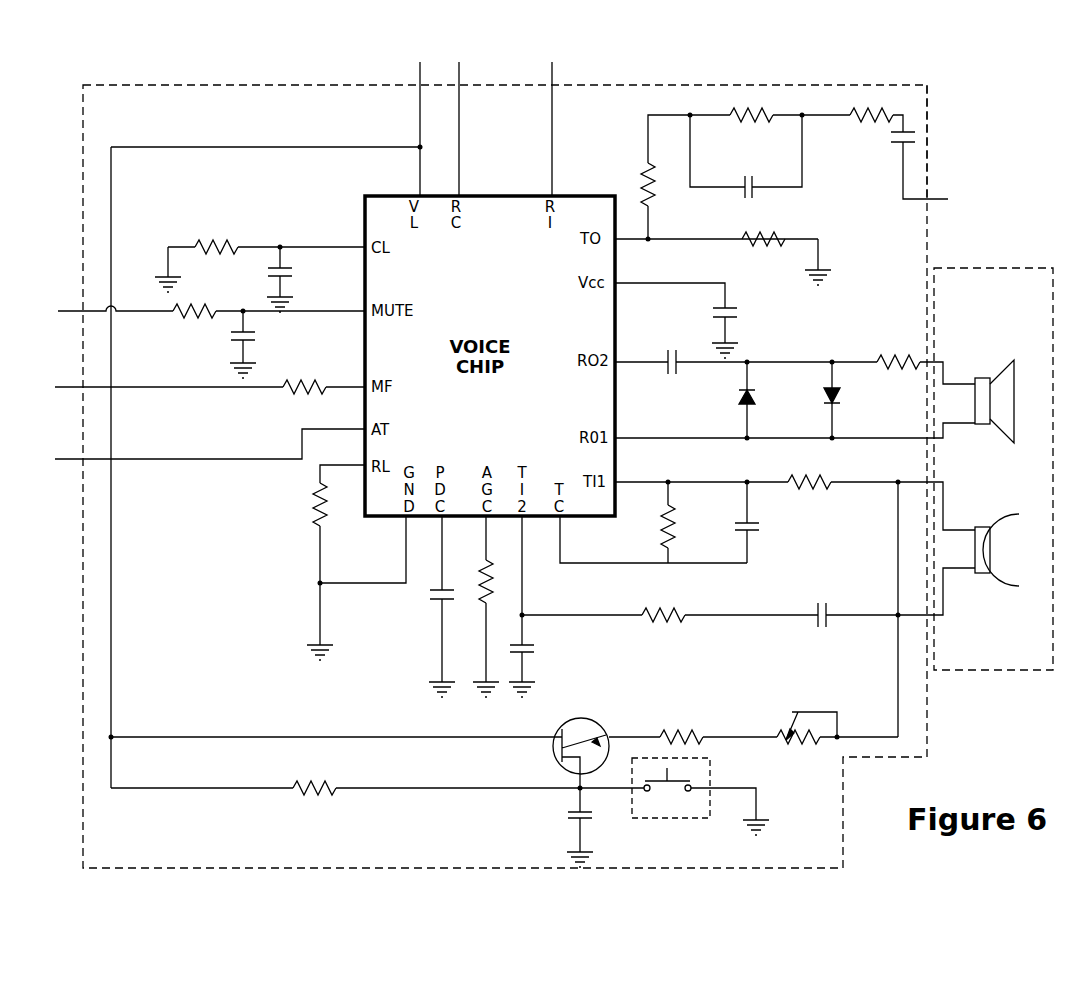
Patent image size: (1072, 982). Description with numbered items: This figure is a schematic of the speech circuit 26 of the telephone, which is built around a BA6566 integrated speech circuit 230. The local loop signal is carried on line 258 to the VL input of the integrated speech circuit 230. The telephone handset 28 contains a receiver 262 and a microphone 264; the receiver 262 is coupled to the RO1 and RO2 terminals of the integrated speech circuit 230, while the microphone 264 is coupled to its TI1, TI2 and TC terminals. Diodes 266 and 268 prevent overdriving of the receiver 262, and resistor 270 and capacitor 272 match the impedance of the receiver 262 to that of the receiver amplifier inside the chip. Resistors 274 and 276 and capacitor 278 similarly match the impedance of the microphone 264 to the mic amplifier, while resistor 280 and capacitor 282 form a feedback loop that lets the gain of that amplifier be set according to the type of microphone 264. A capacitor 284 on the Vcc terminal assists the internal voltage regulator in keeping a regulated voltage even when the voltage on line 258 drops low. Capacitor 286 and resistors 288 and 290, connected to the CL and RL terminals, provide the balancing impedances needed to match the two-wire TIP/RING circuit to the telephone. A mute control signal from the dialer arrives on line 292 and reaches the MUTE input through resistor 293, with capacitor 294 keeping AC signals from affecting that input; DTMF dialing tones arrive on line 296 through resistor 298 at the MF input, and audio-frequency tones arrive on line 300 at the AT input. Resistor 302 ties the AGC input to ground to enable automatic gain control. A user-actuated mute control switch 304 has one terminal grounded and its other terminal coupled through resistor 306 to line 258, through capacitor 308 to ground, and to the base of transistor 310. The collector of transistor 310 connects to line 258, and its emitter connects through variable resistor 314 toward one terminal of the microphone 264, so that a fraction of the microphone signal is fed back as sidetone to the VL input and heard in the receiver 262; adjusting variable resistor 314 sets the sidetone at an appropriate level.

The speech circuit 26 is at (930, 172).
The telephone handset 28 is at (1032, 268).
The integrated speech circuit 230 is at (604, 194).
The line 258 is at (420, 99).
The receiver 262 is at (1010, 362).
The microphone 264 is at (1002, 594).
The diode 266 is at (742, 405).
The diode 268 is at (828, 408).
The resistor 270 is at (897, 376).
The capacitor 272 is at (672, 380).
The resistor 274 is at (822, 494).
The resistor 276 is at (664, 626).
The capacitor 278 is at (826, 602).
The resistor 280 is at (664, 527).
The capacitor 282 is at (762, 537).
The capacitor 284 is at (713, 318).
The capacitor 286 is at (292, 277).
The resistor 288 is at (214, 247).
The resistor 290 is at (311, 514).
The line 292 is at (132, 318).
The resistor 293 is at (182, 322).
The capacitor 294 is at (257, 339).
The line 296 is at (203, 396).
The resistor 298 is at (291, 404).
The line 300 is at (216, 472).
The resistor 302 is at (480, 610).
The mute control switch 304 is at (670, 826).
The resistor 306 is at (306, 804).
The capacitor 308 is at (574, 821).
The transistor 310 is at (579, 716).
The variable resistor 314 is at (814, 712).